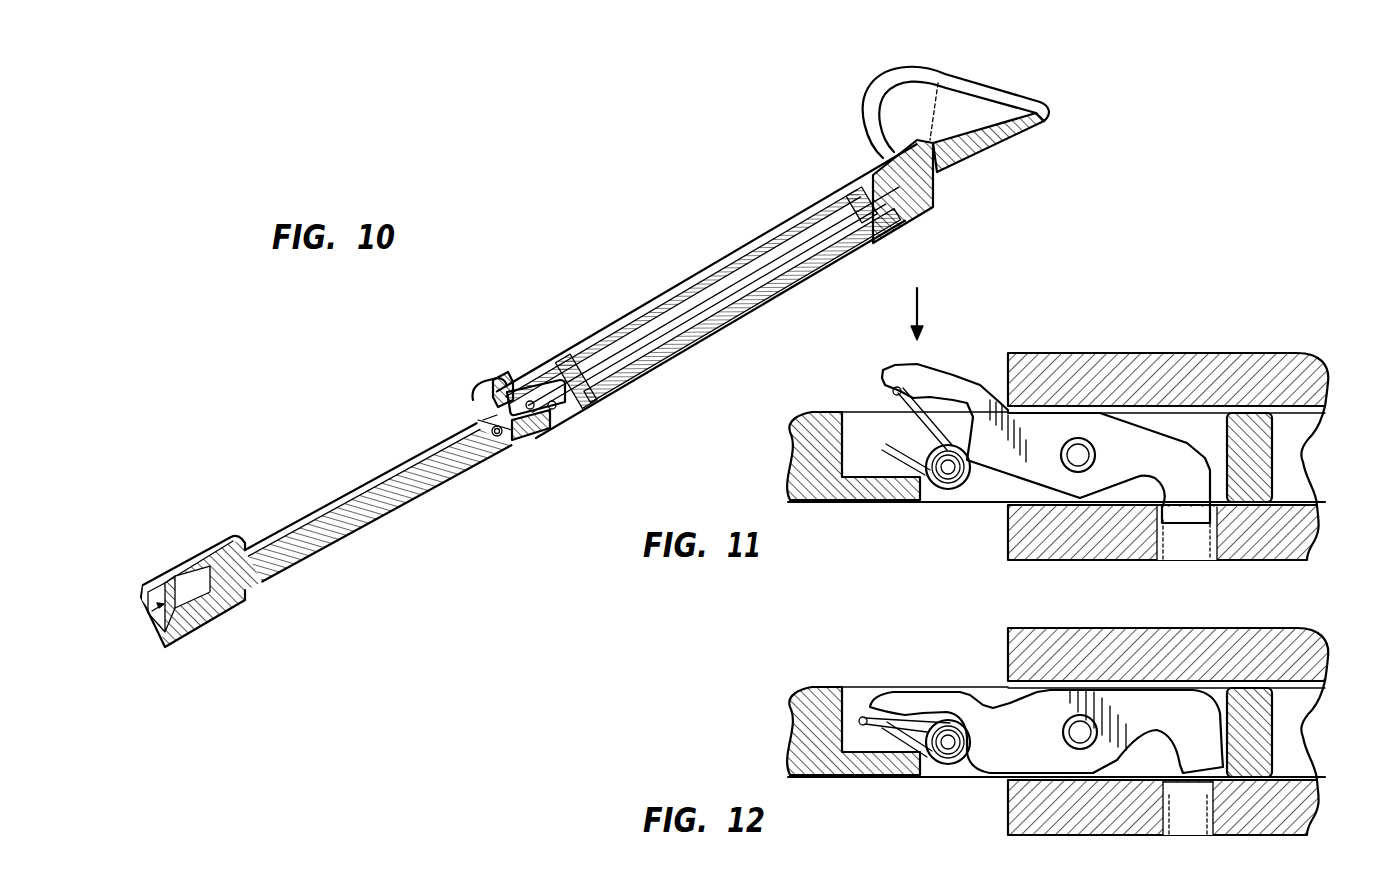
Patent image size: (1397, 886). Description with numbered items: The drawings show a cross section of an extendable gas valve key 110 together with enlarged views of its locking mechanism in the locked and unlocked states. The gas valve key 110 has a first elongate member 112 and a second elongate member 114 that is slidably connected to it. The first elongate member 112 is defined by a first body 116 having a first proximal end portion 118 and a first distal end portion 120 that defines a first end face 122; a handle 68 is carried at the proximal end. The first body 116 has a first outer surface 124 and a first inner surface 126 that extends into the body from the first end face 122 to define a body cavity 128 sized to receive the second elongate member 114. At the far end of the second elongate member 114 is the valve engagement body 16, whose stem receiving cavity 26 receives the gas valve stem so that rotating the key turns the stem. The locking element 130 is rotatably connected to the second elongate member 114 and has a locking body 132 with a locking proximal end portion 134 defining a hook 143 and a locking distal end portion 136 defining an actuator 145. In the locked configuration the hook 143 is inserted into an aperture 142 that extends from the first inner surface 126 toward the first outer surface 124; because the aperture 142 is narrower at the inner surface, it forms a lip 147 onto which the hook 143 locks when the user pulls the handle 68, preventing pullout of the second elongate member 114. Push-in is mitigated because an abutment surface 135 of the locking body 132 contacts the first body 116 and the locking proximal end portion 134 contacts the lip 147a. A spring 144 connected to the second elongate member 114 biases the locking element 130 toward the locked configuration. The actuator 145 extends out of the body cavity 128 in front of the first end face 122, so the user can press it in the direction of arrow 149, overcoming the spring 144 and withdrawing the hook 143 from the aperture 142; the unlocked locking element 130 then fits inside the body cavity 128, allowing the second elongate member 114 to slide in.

In FIG. 10, the valve engagement body 16 is at (190, 565).
In FIG. 10, the stem receiving cavity 26 is at (144, 620).
In FIG. 10, the handle 68 is at (985, 105).
In FIG. 10, the gas valve key 110 is at (612, 213).
In FIG. 10, the first elongate member 112 is at (758, 322).
In FIG. 10, the second elongate member 114 is at (395, 510).
In FIG. 11, the second elongate member 114 is at (838, 507).
In FIG. 12, the second elongate member 114 is at (1056, 732).
In FIG. 10, the first body 116 is at (693, 275).
In FIG. 10, the first proximal end portion 118 is at (835, 197).
In FIG. 10, the first distal end portion 120 is at (522, 370).
In FIG. 10, the first end face 122 is at (490, 386).
In FIG. 11, the first end face 122 is at (1003, 375).
In FIG. 12, the first end face 122 is at (1003, 647).
In FIG. 10, the first outer surface 124 is at (765, 222).
In FIG. 11, the first outer surface 124 is at (1173, 352).
In FIG. 12, the first outer surface 124 is at (1270, 838).
In FIG. 10, the first inner surface 126 is at (802, 272).
In FIG. 11, the first inner surface 126 is at (1312, 412).
In FIG. 12, the first inner surface 126 is at (1312, 687).
In FIG. 10, the body cavity 128 is at (637, 332).
In FIG. 11, the body cavity 128 is at (1285, 470).
In FIG. 12, the body cavity 128 is at (1285, 742).
In FIG. 10, the locking element 130 is at (466, 400).
In FIG. 11, the locking element 130 is at (990, 483).
In FIG. 12, the locking element 130 is at (988, 780).
In FIG. 11, the locking body 132 is at (1085, 425).
In FIG. 12, the locking body 132 is at (1052, 750).
In FIG. 11, the locking proximal end portion 134 is at (1193, 470).
In FIG. 12, the locking proximal end portion 134 is at (1193, 725).
In FIG. 11, the abutment surface 135 is at (1052, 432).
In FIG. 12, the abutment surface 135 is at (993, 705).
In FIG. 11, the locking distal end portion 136 is at (945, 380).
In FIG. 12, the locking distal end portion 136 is at (925, 700).
In FIG. 10, the aperture 142 is at (563, 420).
In FIG. 11, the aperture 142 is at (1183, 545).
In FIG. 12, the aperture 142 is at (1188, 810).
In FIG. 11, the hook 143 is at (1215, 522).
In FIG. 11, the spring 144 is at (940, 492).
In FIG. 12, the spring 144 is at (943, 762).
In FIG. 11, the actuator 145 is at (908, 367).
In FIG. 11, the lip 147 is at (1155, 508).
In FIG. 11, the lip 147a is at (1268, 490).
In FIG. 11, the arrow 149 is at (925, 293).